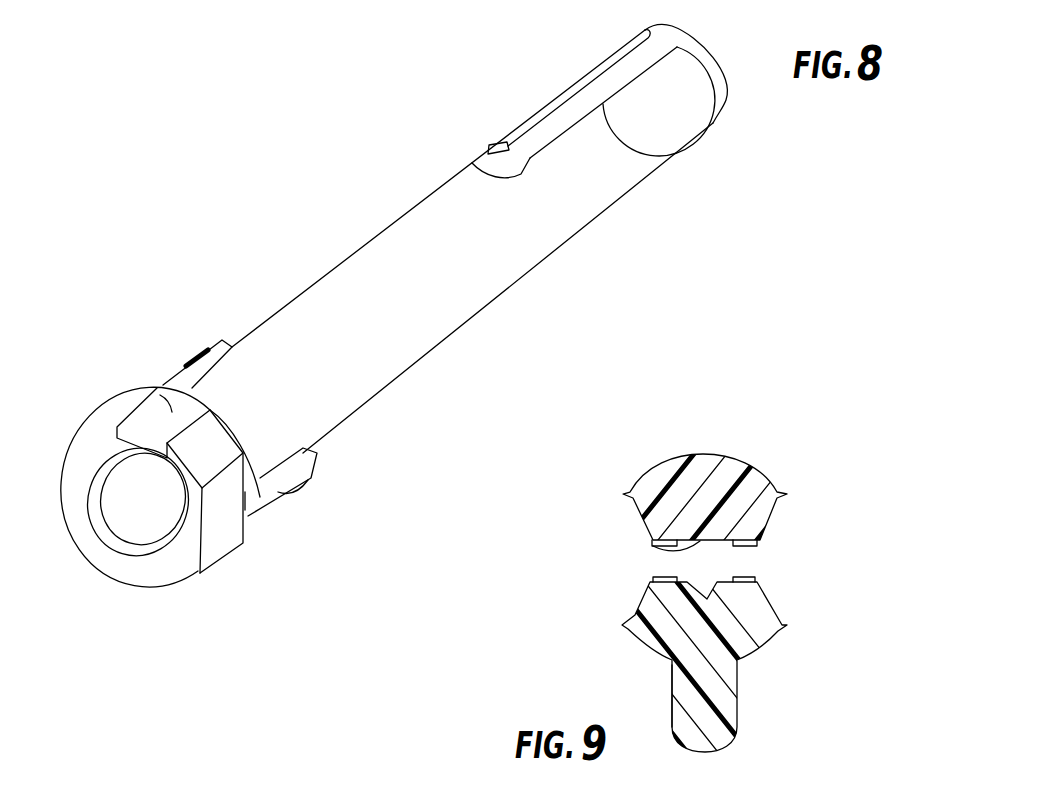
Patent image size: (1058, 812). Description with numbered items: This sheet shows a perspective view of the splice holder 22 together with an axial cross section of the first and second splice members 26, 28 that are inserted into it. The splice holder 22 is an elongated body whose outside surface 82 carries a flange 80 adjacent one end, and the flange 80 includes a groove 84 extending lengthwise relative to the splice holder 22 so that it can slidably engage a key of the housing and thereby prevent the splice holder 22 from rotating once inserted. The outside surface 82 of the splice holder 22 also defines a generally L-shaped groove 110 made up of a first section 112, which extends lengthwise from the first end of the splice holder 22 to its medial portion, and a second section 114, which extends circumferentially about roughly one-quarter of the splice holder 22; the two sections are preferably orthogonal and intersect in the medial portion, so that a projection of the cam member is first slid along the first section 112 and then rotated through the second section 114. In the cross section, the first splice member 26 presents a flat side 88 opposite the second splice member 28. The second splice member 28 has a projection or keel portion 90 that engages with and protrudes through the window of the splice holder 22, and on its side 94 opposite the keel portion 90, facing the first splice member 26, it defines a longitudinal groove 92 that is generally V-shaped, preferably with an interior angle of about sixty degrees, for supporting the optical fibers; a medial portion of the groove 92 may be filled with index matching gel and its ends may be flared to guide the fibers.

In FIG. 8, the splice holder 22 is at (655, 264).
In FIG. 8, the flange 80 is at (103, 415).
In FIG. 8, the outside surface 82 is at (368, 305).
In FIG. 8, the groove 84 is at (160, 424).
In FIG. 8, the groove 110 is at (514, 176).
In FIG. 8, the first section 112 is at (606, 112).
In FIG. 8, the second section 114 is at (490, 144).
In FIG. 9, the first splice member 26 is at (801, 481).
In FIG. 9, the second splice member 28 is at (801, 593).
In FIG. 9, the flat side 88 is at (677, 552).
In FIG. 9, the keel portion 90 is at (738, 714).
In FIG. 9, the groove 92 is at (727, 580).
In FIG. 9, the side 94 is at (678, 569).